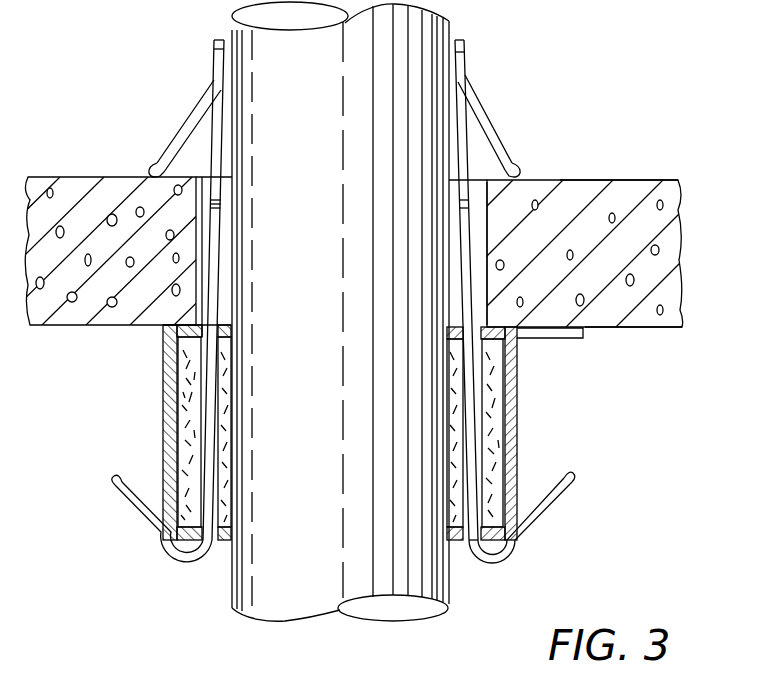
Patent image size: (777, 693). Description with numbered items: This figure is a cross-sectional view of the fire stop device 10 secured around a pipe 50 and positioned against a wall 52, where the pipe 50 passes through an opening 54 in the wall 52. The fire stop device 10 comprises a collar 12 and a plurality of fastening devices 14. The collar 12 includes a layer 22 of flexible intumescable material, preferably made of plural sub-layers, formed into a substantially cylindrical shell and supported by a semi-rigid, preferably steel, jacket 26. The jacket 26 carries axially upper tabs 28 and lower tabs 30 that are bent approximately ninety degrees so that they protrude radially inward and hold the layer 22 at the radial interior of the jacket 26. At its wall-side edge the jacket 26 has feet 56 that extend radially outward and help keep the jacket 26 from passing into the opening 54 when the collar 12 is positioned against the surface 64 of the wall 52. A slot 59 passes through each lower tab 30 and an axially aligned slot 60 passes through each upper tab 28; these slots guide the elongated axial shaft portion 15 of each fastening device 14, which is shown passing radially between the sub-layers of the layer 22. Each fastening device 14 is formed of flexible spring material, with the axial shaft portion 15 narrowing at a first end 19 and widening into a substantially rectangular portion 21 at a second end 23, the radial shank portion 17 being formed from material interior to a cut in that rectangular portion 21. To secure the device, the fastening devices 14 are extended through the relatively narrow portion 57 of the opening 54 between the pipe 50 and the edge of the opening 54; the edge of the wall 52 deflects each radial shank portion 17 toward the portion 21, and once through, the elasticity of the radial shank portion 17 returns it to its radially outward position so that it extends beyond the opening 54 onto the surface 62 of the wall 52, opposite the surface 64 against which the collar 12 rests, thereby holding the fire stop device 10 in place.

The fire stop device 10 is at (182, 286).
The collar 12 is at (150, 428).
The fastening device 14 is at (236, 232).
The elongated axial shaft portion 15 is at (210, 423).
The radial shank portion 17 is at (190, 120).
The first end 19 is at (112, 480).
The rectangular portion 21 is at (219, 38).
The layer of intumescable material 22 is at (457, 450).
The second end 23 is at (222, 203).
The jacket 26 is at (517, 412).
The upper tab 28 is at (497, 540).
The lower tab 30 is at (228, 325).
The pipe 50 is at (440, 605).
The wall 52 is at (678, 218).
The opening 54 is at (483, 202).
The feet 56 is at (570, 338).
The portion of opening 57 is at (480, 222).
The slot 59 is at (460, 325).
The slot 60 is at (472, 532).
The surface 62 is at (660, 181).
The surface 64 is at (668, 335).